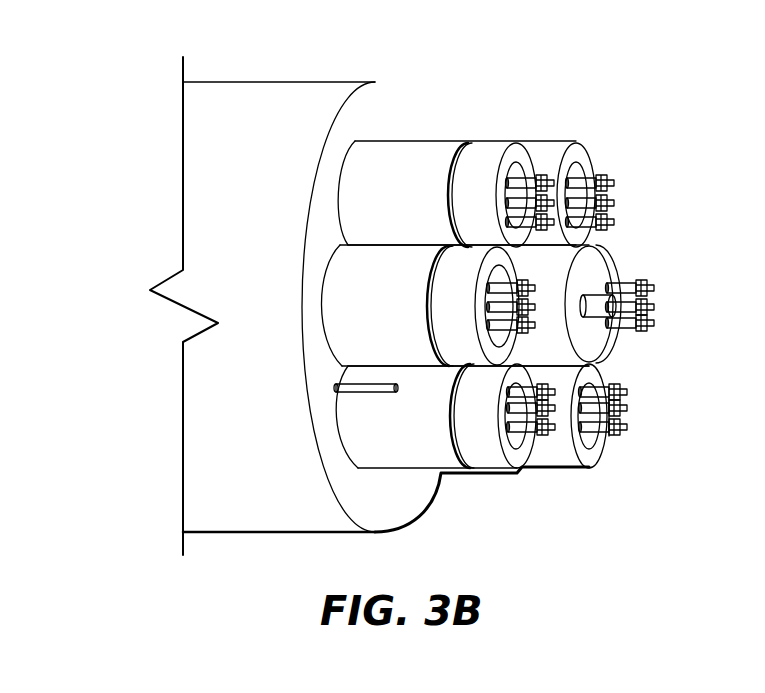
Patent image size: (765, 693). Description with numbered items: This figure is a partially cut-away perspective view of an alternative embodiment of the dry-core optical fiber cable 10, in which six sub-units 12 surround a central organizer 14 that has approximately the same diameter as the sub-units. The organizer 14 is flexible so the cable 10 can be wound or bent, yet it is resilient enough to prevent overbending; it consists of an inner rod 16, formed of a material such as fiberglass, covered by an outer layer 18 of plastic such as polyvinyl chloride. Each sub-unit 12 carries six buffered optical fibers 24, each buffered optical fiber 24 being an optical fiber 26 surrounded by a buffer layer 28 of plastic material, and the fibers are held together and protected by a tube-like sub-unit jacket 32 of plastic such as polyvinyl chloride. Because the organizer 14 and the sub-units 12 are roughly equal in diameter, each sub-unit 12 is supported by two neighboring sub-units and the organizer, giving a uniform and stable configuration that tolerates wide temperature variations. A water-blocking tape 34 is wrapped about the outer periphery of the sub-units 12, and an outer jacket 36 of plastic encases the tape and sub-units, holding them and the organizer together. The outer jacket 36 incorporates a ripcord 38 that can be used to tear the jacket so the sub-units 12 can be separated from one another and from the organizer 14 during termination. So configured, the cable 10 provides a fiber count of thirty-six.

The cable 10 is at (112, 108).
The sub-unit 12 is at (459, 121).
The organizer 14 is at (612, 251).
The inner rod 16 is at (621, 334).
The outer layer 18 is at (588, 338).
The buffered optical fiber 24 is at (595, 163).
The optical fiber 26 is at (632, 425).
The buffer layer 28 is at (620, 433).
The sub-unit jacket 32 is at (487, 459).
The water-blocking tape 34 is at (366, 443).
The outer jacket 36 is at (210, 223).
The ripcord 38 is at (337, 386).